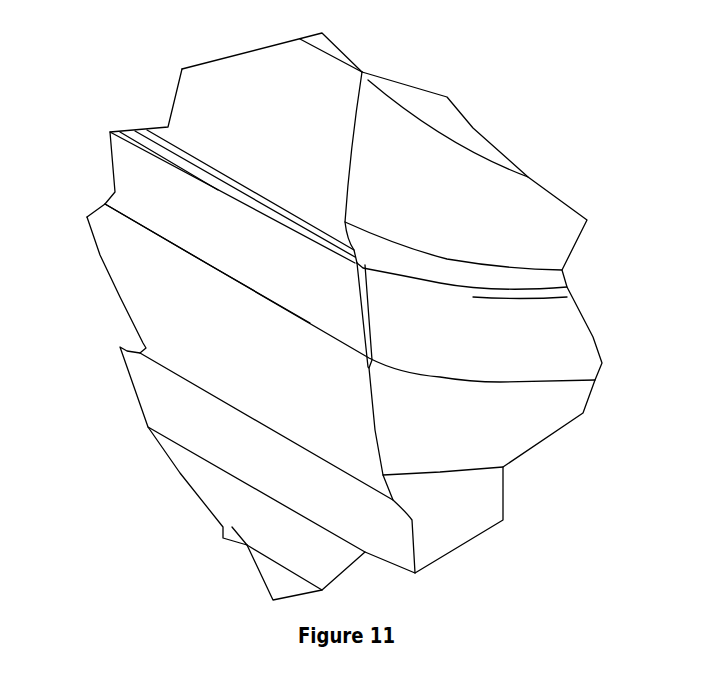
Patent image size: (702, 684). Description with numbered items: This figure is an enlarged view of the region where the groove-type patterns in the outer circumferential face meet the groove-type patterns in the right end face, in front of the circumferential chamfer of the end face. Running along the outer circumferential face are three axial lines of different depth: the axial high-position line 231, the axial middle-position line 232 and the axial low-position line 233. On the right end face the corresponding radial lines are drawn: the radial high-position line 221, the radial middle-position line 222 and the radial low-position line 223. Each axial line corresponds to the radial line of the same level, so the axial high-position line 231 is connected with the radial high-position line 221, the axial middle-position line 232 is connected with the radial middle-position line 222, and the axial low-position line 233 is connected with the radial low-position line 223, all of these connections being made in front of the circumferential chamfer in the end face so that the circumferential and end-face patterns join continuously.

The radial high-position line 221 is at (500, 382).
The radial middle-position line 222 is at (473, 297).
The radial low-position line 223 is at (447, 282).
The axial high-position line 231 is at (213, 267).
The axial middle-position line 232 is at (218, 190).
The axial low-position line 233 is at (218, 173).